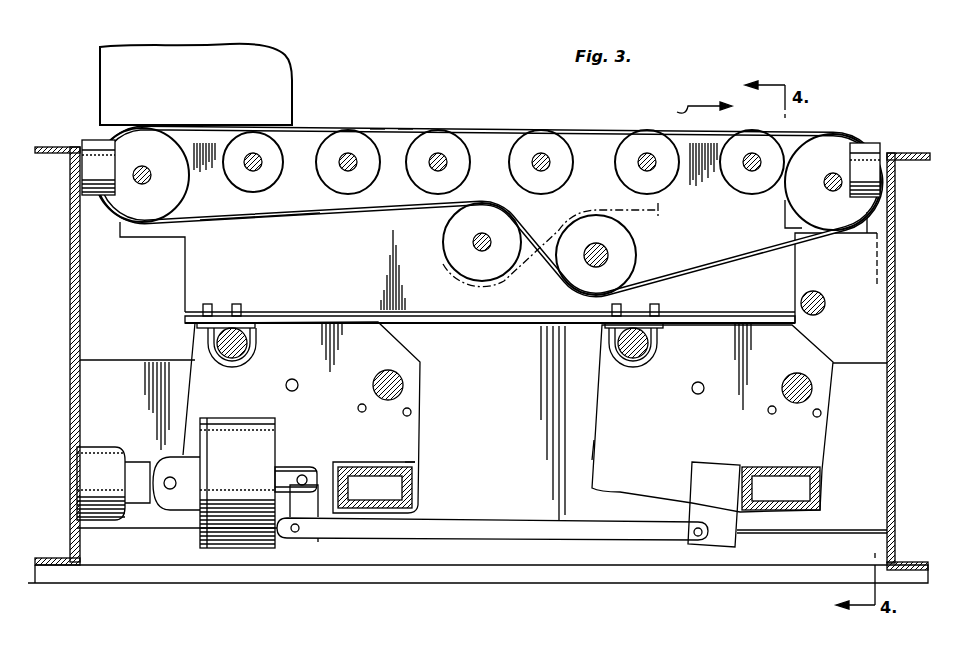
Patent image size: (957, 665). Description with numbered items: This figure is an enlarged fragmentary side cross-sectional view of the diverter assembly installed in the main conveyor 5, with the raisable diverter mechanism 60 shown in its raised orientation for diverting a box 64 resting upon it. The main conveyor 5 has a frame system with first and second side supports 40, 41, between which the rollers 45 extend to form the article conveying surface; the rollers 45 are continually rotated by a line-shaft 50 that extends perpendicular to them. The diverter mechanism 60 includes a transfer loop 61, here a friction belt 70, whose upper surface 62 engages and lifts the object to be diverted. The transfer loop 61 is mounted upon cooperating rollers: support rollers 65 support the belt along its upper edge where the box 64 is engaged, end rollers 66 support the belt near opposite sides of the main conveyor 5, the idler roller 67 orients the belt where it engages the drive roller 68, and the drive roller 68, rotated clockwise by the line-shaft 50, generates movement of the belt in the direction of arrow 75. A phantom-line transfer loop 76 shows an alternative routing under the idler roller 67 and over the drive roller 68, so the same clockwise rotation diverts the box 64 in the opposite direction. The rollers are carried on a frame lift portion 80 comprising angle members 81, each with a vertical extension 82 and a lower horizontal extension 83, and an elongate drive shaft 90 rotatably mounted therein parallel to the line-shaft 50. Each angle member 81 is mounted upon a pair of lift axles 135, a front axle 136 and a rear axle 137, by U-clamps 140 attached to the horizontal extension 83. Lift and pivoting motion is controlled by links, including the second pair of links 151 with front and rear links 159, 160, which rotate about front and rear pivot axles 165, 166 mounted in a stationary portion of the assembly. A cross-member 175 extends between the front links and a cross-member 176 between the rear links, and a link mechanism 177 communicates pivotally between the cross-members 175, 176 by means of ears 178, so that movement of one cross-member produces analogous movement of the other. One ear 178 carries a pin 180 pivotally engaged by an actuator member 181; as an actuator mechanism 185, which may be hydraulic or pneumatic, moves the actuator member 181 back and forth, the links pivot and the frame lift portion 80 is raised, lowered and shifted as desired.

The main conveyor 5 is at (920, 155).
The first side support 40 is at (927, 162).
The second side support 41 is at (52, 156).
The rollers 45 is at (875, 143).
The line-shaft 50 is at (818, 293).
The diverter mechanism 60 is at (488, 127).
The transfer loop 61 is at (378, 127).
The upper surface 62 is at (405, 127).
The box 64 is at (280, 72).
The support rollers 65 is at (520, 173).
The end rollers 66 is at (802, 202).
The idler roller 67 is at (452, 223).
The drive roller 68 is at (625, 243).
The friction belt 70 is at (298, 219).
The arrow 75 is at (693, 113).
The transfer loop (phantom position) 76 is at (505, 280).
The frame lift portion 80 is at (197, 270).
The angle member 81 is at (523, 320).
The vertical extension 82 is at (361, 270).
The lower horizontal extension 83 is at (472, 315).
The drive shaft 90 is at (606, 263).
The lift axles 135 is at (633, 365).
The front axle 136 is at (653, 343).
The rear axle 137 is at (247, 343).
The U-clamps 140 is at (205, 338).
The second pair of links 151 is at (597, 422).
The front link 159 is at (592, 445).
The rear link 160 is at (412, 462).
The front pivot axle 165 is at (802, 368).
The rear pivot axle 166 is at (392, 368).
The cross-member 175 is at (818, 490).
The cross-member 176 is at (415, 488).
The link mechanism 177 is at (548, 533).
The ears 178 is at (715, 467).
The pin 180 is at (302, 467).
The actuator member 181 is at (267, 438).
The actuator mechanism 185 is at (100, 458).